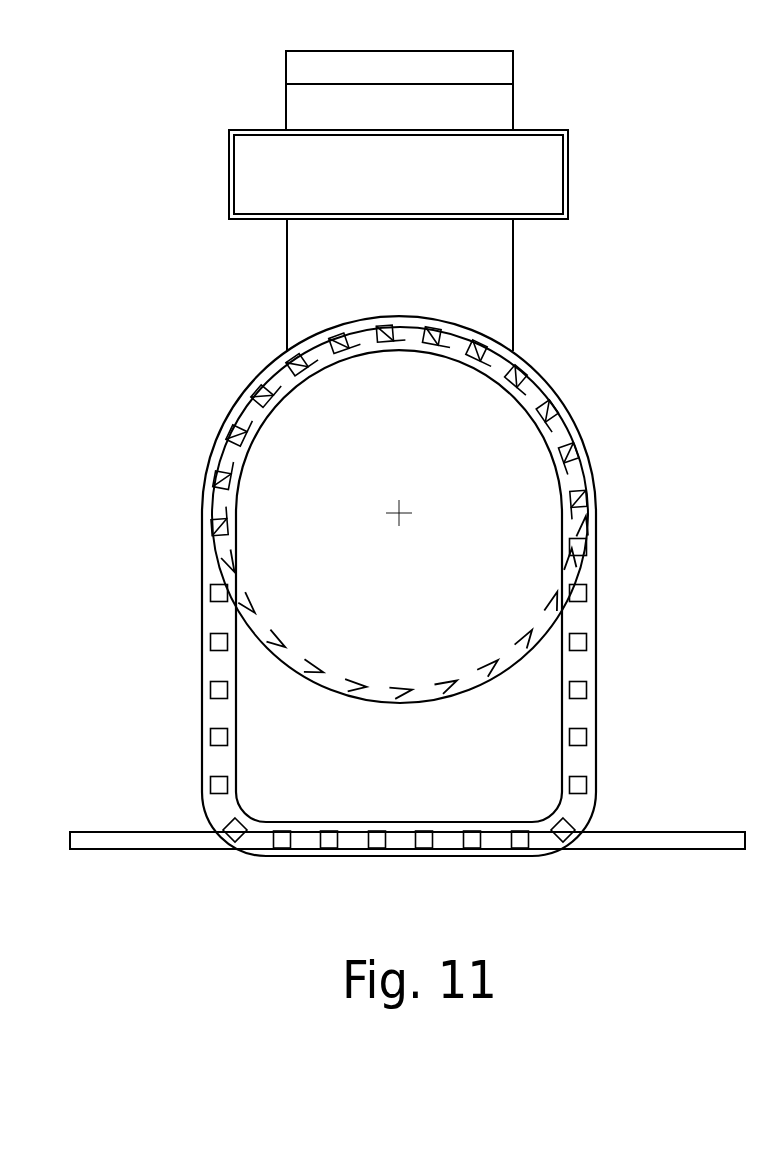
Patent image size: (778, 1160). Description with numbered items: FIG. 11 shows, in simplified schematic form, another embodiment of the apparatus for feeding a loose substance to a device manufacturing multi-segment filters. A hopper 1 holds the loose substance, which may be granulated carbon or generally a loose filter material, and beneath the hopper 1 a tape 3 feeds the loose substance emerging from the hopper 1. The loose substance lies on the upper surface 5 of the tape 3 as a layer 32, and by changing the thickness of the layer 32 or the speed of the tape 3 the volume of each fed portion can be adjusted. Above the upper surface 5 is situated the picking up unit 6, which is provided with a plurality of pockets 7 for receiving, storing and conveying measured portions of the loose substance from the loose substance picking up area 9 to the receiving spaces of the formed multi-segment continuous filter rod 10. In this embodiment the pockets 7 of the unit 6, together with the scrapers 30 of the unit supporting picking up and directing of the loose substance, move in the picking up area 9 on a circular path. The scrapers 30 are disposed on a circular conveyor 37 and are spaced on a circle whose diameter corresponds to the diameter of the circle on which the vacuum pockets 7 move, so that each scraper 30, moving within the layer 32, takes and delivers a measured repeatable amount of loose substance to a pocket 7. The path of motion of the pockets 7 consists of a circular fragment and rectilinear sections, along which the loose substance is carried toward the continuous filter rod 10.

The hopper 1 is at (227, 193).
The tape 3 is at (502, 113).
The upper surface 5 is at (510, 290).
The layer 32 is at (307, 254).
The loose substance picking up area 9 is at (527, 318).
The picking up unit 6 is at (612, 578).
The pockets 7 is at (587, 688).
The circular conveyor 37 is at (293, 530).
The scrapers 30 is at (275, 655).
The multi-segment continuous filter rod 10 is at (165, 842).